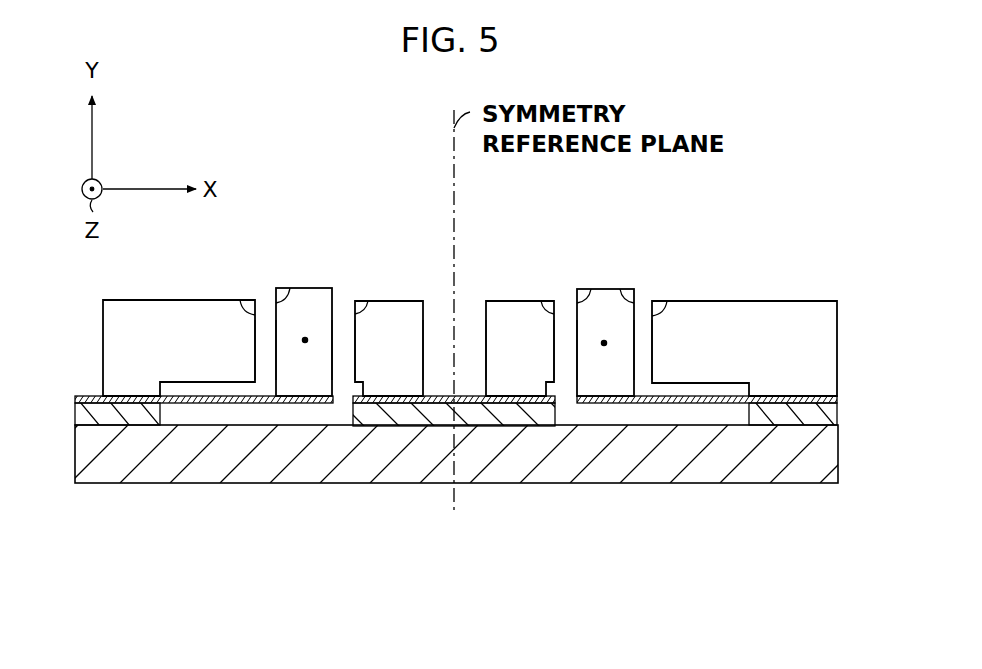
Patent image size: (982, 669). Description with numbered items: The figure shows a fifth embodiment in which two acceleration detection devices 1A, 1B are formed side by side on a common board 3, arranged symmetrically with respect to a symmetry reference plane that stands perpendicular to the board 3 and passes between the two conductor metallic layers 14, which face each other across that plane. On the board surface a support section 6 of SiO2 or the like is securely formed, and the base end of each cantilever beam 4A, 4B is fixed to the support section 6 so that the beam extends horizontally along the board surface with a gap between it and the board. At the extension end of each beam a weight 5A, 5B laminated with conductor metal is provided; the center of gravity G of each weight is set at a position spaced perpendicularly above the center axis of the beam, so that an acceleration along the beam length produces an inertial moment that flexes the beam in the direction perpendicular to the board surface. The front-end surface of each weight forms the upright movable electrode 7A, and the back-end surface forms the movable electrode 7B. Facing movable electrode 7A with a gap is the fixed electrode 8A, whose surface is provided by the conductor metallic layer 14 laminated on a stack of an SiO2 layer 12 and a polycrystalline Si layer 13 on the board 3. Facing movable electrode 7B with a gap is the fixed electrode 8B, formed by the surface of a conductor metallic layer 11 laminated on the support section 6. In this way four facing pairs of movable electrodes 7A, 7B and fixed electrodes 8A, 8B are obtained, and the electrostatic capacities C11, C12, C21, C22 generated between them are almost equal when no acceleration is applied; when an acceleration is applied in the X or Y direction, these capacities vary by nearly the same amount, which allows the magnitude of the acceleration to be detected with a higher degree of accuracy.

The acceleration detection device 1A is at (320, 210).
The acceleration detection device 1B is at (748, 199).
The board 3 is at (364, 470).
The beam 4A is at (206, 403).
The beam 4B is at (709, 403).
The weight 5A is at (296, 300).
The weight 5B is at (616, 300).
The support section 6 is at (77, 412).
The movable electrode 7A is at (343, 313).
The movable electrode 7B is at (268, 308).
The fixed electrode 8A is at (360, 313).
The fixed electrode 8B is at (240, 312).
The conductor metallic layer 11 is at (157, 310).
The SiO2 layer 12 is at (492, 420).
The polycrystalline Si layer 13 is at (527, 405).
The conductor metallic layer 14 is at (418, 348).
The electrostatic capacity C11 is at (350, 313).
The electrostatic capacity C12 is at (258, 312).
The electrostatic capacity C21 is at (565, 317).
The electrostatic capacity C22 is at (642, 313).
The center of gravity G is at (305, 343).